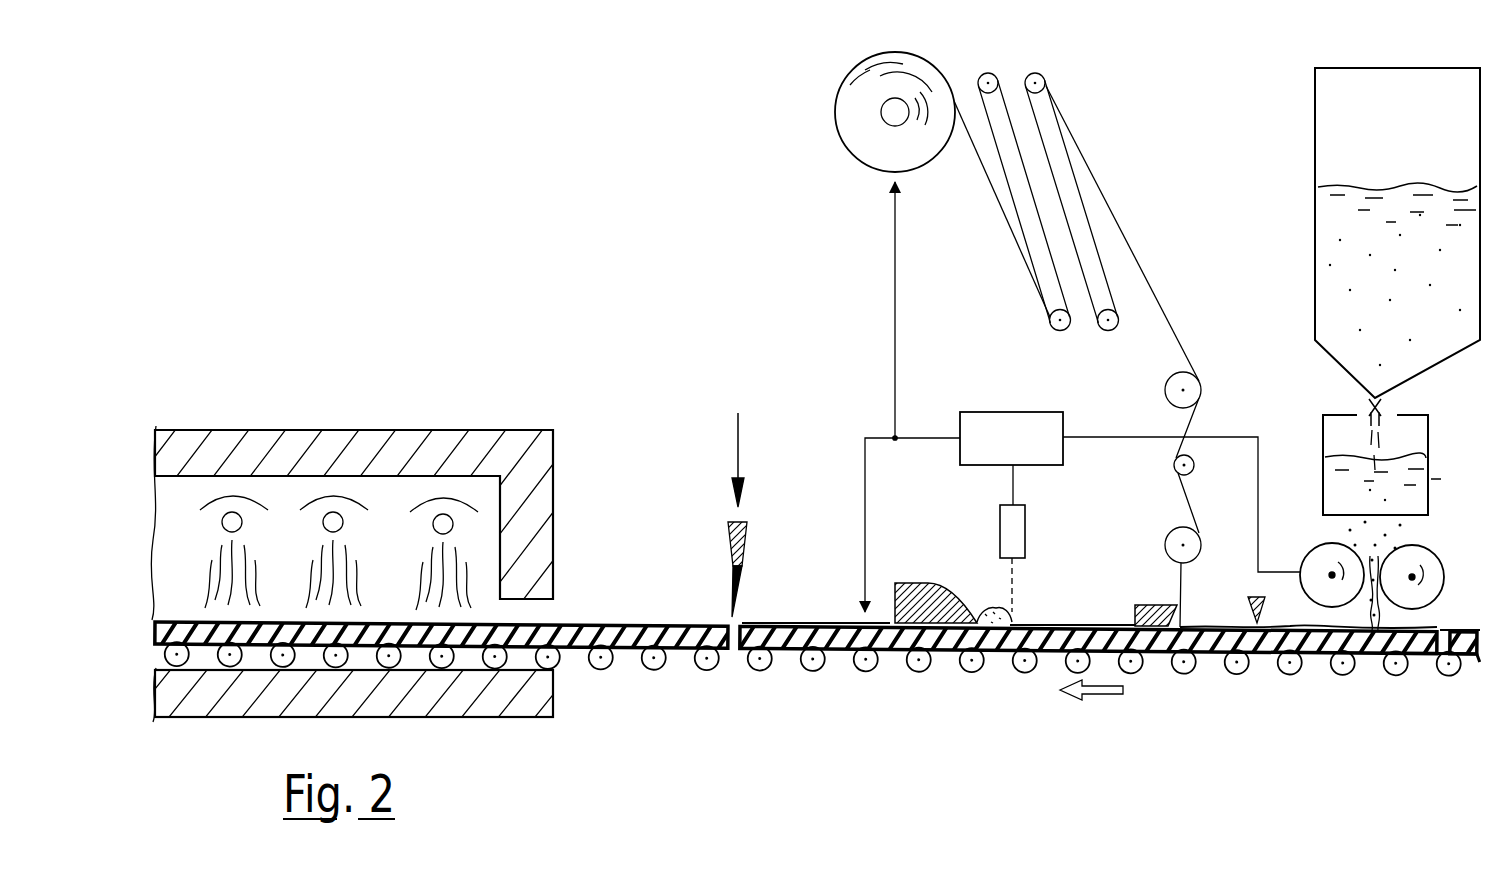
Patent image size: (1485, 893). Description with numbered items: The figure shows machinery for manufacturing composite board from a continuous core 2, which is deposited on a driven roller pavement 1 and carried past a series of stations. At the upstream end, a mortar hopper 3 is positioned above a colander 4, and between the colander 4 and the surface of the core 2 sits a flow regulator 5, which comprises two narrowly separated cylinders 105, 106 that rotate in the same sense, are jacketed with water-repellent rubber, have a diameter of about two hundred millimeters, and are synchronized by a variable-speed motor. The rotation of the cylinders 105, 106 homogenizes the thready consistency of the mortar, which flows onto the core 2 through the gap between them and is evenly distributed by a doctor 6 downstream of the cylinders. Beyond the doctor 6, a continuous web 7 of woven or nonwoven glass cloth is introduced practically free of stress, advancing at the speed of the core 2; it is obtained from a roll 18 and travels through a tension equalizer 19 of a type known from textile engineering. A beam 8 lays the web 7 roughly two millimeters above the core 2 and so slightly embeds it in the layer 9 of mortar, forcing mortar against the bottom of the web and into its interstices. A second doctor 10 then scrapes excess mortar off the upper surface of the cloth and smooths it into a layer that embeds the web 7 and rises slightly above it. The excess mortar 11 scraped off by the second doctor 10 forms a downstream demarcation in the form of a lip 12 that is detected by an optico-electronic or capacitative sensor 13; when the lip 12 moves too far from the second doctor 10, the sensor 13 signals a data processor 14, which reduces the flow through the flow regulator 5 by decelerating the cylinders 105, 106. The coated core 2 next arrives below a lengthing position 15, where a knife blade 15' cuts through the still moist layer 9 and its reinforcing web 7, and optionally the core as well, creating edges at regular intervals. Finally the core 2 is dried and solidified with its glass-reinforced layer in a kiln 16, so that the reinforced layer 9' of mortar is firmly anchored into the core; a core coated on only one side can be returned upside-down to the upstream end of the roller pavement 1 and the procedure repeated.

The roller pavement 1 is at (1270, 656).
The core 2 is at (1470, 628).
The mortar hopper 3 is at (1328, 267).
The colander 4 is at (1340, 478).
The flow regulator 5 is at (1368, 400).
The doctor 6 is at (1258, 597).
The web of woven or nonwoven glass cloth 7 is at (1148, 275).
The beam 8 is at (1145, 603).
The layer of mortar 9 is at (1308, 578).
The reinforced layer of mortar 9' is at (816, 593).
The second doctor 10 is at (910, 592).
The excess mortar 11 is at (980, 608).
The lip 12 is at (1010, 624).
The sensor 13 is at (1015, 537).
The data processor 14 is at (1032, 420).
The lengthing position 15 is at (771, 445).
The knife blade 15' is at (770, 567).
The kiln 16 is at (372, 495).
The roll 18 is at (835, 100).
The tension equalizer 19 is at (1098, 140).
The cylinder 105 is at (1332, 598).
The cylinder 106 is at (1427, 610).